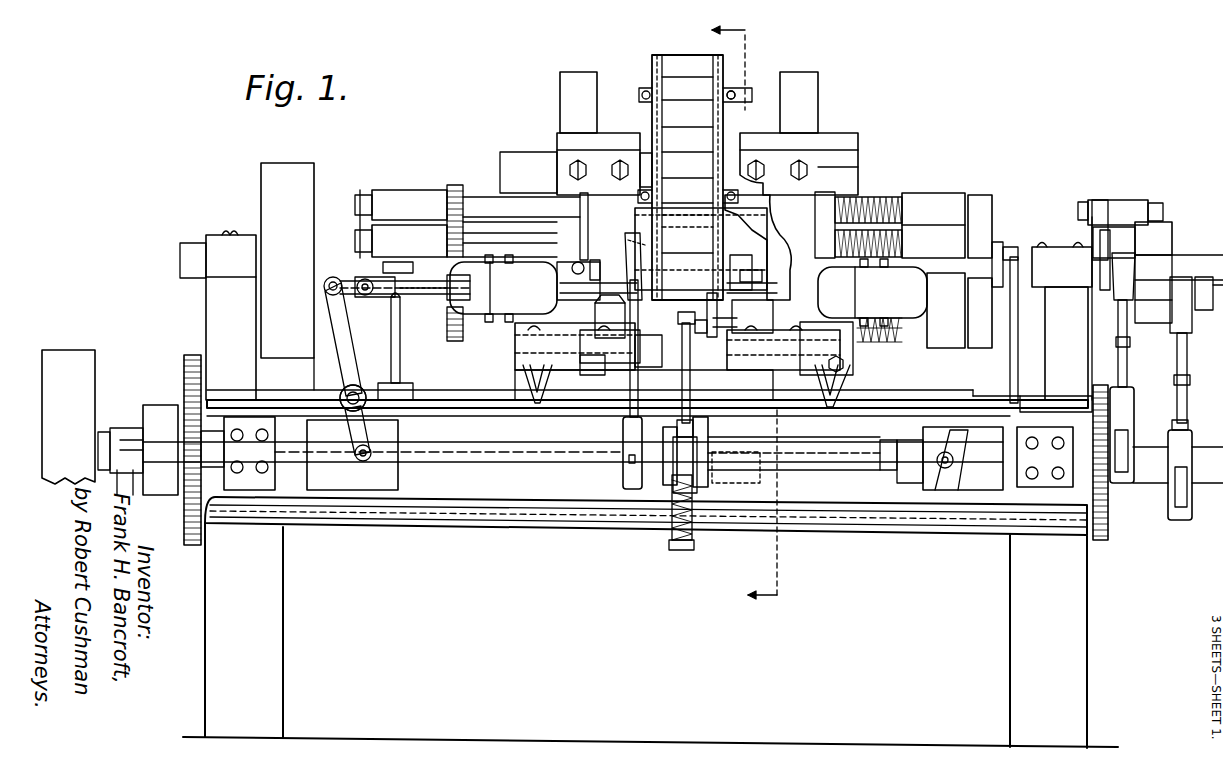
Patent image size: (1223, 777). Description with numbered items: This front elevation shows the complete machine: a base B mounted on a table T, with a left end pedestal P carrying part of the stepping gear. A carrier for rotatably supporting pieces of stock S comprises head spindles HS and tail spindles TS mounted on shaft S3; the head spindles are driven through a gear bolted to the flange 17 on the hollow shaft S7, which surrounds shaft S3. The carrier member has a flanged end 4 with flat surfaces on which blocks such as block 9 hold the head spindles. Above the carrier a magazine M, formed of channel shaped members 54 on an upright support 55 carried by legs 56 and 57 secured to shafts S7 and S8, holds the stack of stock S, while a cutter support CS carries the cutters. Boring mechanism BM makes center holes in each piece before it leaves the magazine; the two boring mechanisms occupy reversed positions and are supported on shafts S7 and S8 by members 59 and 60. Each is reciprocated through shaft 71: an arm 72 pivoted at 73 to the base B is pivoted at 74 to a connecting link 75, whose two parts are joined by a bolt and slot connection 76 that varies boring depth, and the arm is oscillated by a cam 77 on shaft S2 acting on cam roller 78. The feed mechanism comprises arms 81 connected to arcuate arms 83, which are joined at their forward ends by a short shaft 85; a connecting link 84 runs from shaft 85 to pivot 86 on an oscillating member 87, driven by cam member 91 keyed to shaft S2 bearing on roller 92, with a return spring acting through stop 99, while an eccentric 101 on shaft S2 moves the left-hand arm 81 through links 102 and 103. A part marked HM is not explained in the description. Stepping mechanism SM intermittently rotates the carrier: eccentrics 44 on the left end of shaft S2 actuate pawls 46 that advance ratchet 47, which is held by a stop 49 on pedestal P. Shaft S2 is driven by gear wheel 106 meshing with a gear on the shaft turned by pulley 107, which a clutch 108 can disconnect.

The flange 17 is at (283, 163).
The pivot 74 is at (336, 275).
The bolt and slot connection 76 is at (372, 278).
The shaft 71 is at (440, 298).
The connecting link 75 is at (388, 330).
The arm 72 is at (342, 365).
The pivot 73 is at (368, 400).
The pulley 107 is at (70, 350).
The gear wheel 106 is at (185, 360).
The clutch 108 is at (160, 410).
The cam 77 is at (328, 493).
The cam roller 78 is at (395, 493).
The shaft S2 is at (522, 455).
The base B is at (478, 490).
The table T is at (880, 533).
The pedestal P is at (636, 314).
The head spindles HS is at (405, 190).
The cutter support CS is at (560, 80).
The magazine M is at (653, 60).
The stock S is at (948, 289).
The channel shaped members 54 is at (723, 60).
The upright support 55 is at (735, 92).
The flanged end 4 is at (733, 313).
The block 9 is at (655, 290).
The arms 81 is at (728, 268).
The link 103 is at (632, 255).
The boring mechanism BM is at (663, 290).
The supporting member 59 is at (540, 315).
The supporting member 60 is at (818, 322).
The hollow shaft S7 is at (515, 340).
The leg 56 is at (1008, 218).
The leg 57 is at (783, 335).
The shaft S8 is at (853, 348).
The holding mechanism HM is at (644, 367).
The link 102 is at (628, 380).
The eccentric 101 is at (622, 475).
The cam member 91 is at (663, 440).
The connecting link 84 is at (690, 360).
The short shaft 85 is at (698, 333).
The arcuate arms 83 is at (720, 330).
The pivot 86 is at (708, 425).
The oscillating member 87 is at (760, 438).
The stop 99 is at (697, 498).
The roller 92 is at (668, 500).
The tail spindles TS is at (935, 195).
The stepping mechanism SM is at (1172, 195).
The stop 49 is at (1120, 200).
The ratchet 47 is at (1172, 240).
The shaft S3 is at (1209, 272).
The pawls 46 is at (1110, 240).
The eccentrics 44 is at (1165, 500).